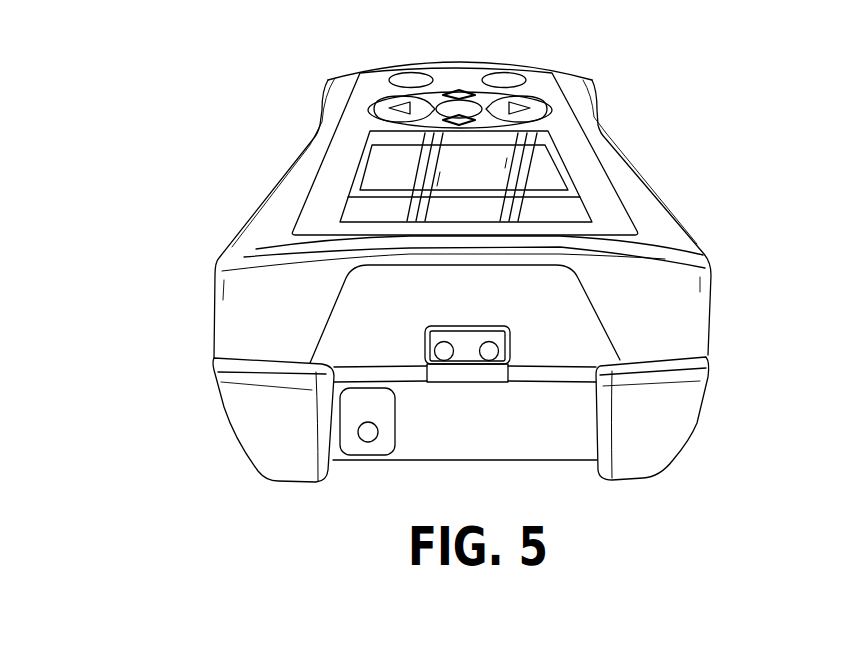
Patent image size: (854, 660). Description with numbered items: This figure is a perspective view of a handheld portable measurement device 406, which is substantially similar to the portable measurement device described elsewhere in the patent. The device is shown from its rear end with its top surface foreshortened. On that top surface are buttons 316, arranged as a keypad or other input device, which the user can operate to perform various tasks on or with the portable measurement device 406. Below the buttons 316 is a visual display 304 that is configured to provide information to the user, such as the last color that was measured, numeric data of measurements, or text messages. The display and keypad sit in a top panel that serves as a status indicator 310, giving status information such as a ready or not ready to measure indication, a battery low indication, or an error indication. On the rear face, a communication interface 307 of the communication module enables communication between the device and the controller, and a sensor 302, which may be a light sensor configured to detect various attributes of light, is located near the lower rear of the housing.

The portable measurement device 406 is at (176, 68).
The buttons 316 is at (387, 97).
The visual display 304 is at (378, 160).
The status indicator 310 is at (568, 201).
The communication interface 307 is at (465, 348).
The sensor 302 is at (386, 415).